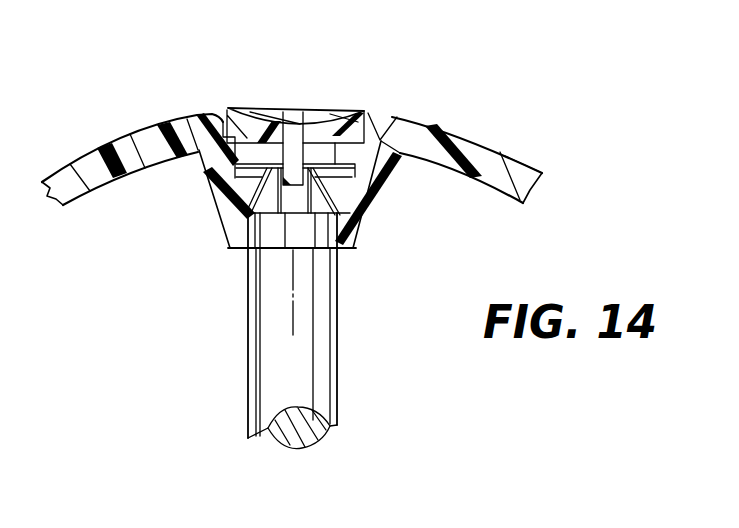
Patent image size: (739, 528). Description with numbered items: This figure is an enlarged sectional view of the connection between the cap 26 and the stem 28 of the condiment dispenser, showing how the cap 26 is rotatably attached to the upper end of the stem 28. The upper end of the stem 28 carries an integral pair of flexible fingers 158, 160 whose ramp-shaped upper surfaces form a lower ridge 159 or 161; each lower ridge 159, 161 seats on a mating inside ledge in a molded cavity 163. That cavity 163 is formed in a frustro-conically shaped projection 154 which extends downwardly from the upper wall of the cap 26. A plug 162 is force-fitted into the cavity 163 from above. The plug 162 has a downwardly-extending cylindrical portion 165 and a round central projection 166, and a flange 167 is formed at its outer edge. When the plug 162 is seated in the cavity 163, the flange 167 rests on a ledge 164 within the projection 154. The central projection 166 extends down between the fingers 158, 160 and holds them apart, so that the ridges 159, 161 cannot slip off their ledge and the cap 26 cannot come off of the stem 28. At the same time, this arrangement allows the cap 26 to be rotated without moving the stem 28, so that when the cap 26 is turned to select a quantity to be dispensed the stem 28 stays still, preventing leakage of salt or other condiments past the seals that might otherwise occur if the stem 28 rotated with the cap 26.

The cap 26 is at (461, 155).
The stem 28 is at (322, 382).
The frustro-conically shaped projection 154 is at (392, 178).
The flexible finger 158 is at (222, 203).
The lower ridge 159 is at (232, 248).
The flexible finger 160 is at (403, 137).
The lower ridge 161 is at (355, 222).
The plug 162 is at (233, 98).
The molded cavity 163 is at (160, 116).
The ledge 164 is at (218, 118).
The cylindrical portion 165 is at (281, 112).
The round central projection 166 is at (325, 112).
The flange 167 is at (380, 112).